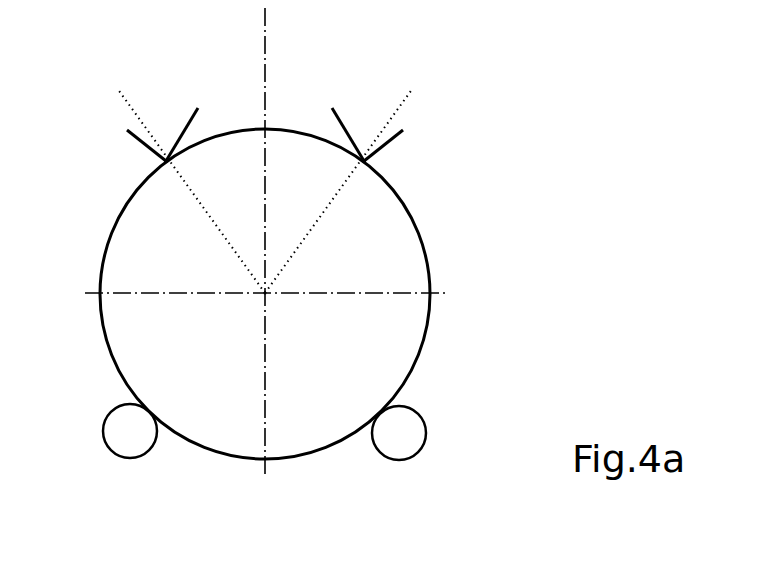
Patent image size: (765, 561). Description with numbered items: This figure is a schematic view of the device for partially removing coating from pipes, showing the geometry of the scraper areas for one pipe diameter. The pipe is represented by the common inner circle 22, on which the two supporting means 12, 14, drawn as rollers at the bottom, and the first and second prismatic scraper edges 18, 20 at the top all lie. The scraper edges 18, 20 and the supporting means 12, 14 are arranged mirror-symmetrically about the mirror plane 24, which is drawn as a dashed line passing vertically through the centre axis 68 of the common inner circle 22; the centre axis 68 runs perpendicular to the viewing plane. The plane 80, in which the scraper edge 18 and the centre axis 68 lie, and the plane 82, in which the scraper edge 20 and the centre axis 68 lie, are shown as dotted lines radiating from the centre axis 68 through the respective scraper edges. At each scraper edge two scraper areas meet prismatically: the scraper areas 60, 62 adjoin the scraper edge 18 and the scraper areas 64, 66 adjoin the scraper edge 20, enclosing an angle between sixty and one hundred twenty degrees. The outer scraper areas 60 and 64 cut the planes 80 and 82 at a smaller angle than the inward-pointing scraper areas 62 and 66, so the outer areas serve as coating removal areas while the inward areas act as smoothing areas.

The supporting means 12 is at (125, 443).
The supporting means 14 is at (403, 447).
The first prismatic scraper edge 18 is at (166, 163).
The second prismatic scraper edge 20 is at (364, 163).
The common inner circle 22 is at (420, 233).
The mirror plane 24 is at (270, 30).
The scraper area 60 is at (138, 140).
The scraper area 62 is at (190, 123).
The scraper area 64 is at (397, 141).
The scraper area 66 is at (341, 127).
The centre axis 68 is at (259, 299).
The plane 80 is at (225, 240).
The plane 82 is at (306, 240).